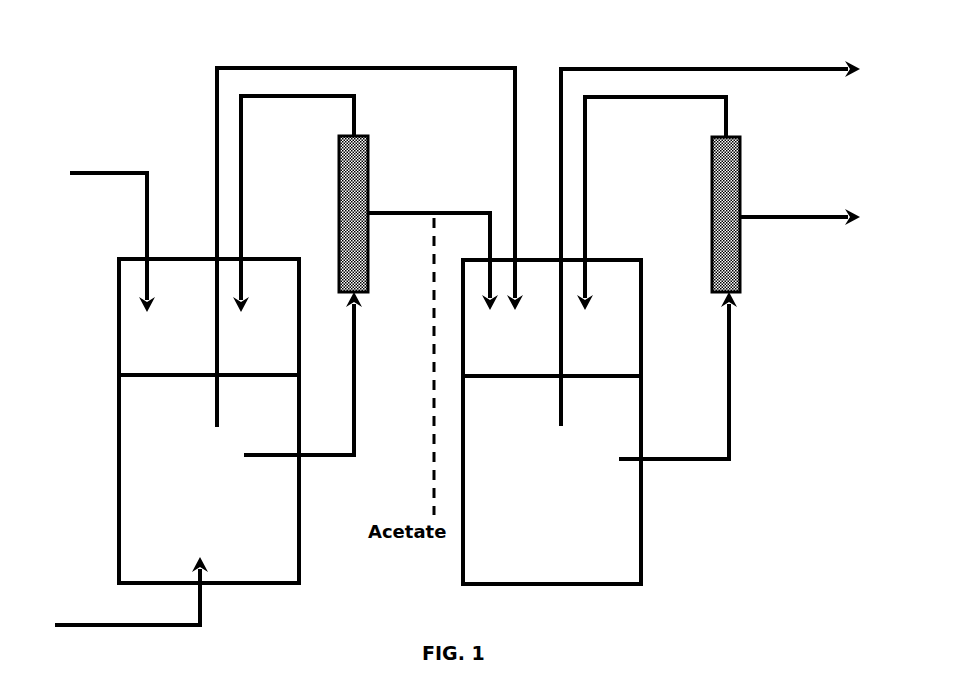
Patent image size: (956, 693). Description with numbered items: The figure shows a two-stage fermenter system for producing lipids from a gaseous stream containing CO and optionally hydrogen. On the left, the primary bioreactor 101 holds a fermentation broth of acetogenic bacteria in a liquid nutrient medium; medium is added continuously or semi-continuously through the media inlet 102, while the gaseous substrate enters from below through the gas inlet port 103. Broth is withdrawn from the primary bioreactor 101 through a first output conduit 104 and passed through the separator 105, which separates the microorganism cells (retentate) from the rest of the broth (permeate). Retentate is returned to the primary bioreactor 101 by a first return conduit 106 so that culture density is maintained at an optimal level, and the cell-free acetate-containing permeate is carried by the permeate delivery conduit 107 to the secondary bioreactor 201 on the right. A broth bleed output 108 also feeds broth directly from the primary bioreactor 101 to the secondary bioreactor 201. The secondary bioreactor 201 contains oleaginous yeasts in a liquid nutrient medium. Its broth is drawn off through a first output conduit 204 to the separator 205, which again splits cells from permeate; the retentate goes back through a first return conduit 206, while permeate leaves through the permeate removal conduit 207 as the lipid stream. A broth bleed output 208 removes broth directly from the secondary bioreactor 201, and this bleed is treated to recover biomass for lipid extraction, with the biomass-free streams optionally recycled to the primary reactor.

The primary bioreactor 101 is at (168, 421).
The media inlet 102 is at (108, 226).
The gas inlet port 103 is at (126, 611).
The first output conduit 104 is at (324, 373).
The separator 105 is at (382, 214).
The first return conduit 106 is at (293, 204).
The permeate delivery conduit 107 is at (433, 241).
The broth bleed output 108 is at (370, 231).
The secondary bioreactor 201 is at (584, 422).
The first output conduit 204 is at (679, 398).
The separator 205 is at (759, 214).
The first return conduit 206 is at (651, 203).
The permeate removal conduit 207 is at (800, 178).
The broth bleed output 208 is at (710, 233).